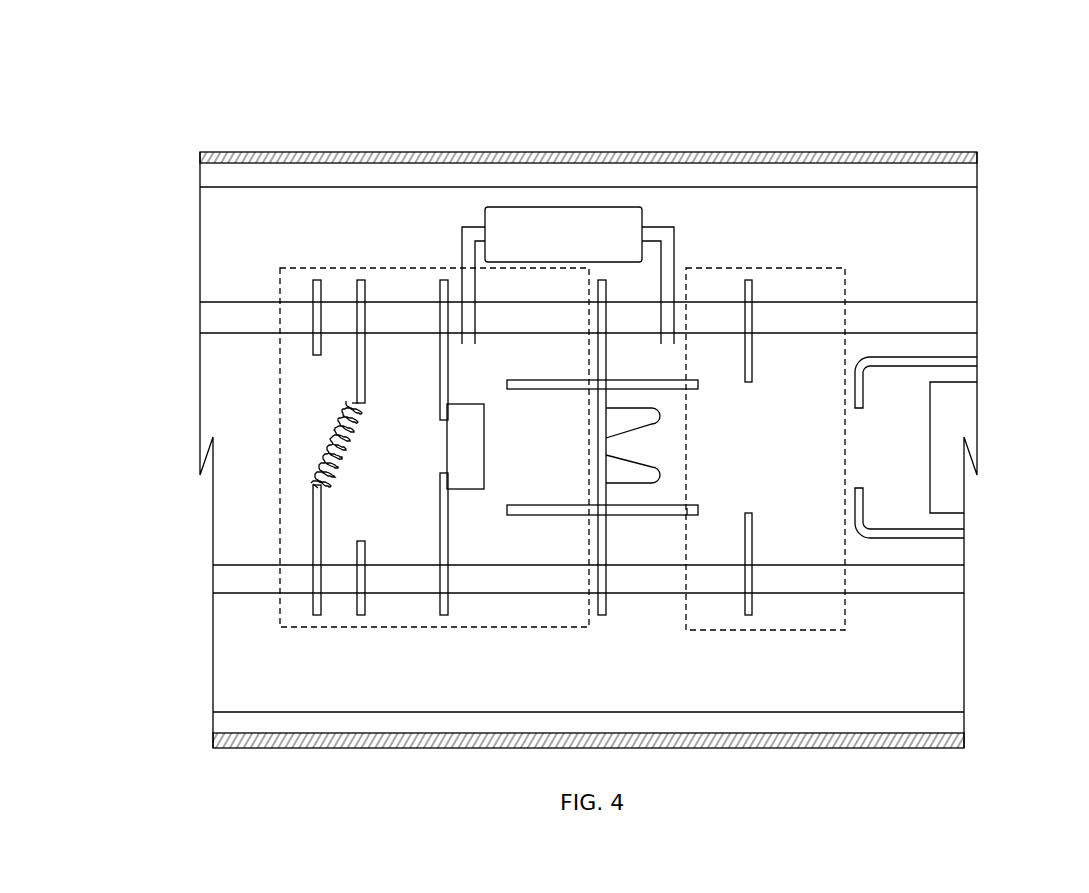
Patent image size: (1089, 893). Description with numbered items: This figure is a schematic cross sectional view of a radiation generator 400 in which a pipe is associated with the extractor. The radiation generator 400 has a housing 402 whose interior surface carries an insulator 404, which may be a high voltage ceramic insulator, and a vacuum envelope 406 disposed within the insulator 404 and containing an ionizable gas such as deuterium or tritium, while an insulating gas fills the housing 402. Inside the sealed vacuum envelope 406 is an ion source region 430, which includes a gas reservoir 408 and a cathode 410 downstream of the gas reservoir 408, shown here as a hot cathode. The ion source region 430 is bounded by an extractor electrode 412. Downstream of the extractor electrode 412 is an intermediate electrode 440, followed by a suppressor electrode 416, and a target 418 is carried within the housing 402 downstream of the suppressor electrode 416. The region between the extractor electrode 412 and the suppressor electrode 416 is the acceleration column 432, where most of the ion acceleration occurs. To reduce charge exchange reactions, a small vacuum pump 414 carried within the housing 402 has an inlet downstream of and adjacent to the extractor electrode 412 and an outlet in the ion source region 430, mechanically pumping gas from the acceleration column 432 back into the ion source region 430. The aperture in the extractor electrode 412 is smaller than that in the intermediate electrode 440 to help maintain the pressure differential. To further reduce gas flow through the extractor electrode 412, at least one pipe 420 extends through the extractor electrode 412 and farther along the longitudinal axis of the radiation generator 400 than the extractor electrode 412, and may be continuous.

The radiation generator 400 is at (89, 81).
The housing 402 is at (200, 153).
The insulator 404 is at (200, 183).
The vacuum envelope 406 is at (200, 320).
The gas reservoir 408 is at (330, 422).
The cathode 410 is at (447, 463).
The extractor electrode 412 is at (590, 487).
The vacuum pump 414 is at (642, 212).
The suppressor electrode 416 is at (977, 362).
The target 418 is at (977, 410).
The pipe 420 is at (698, 510).
The ion source region 430 is at (280, 288).
The acceleration column 432 is at (845, 607).
The intermediate electrode 440 is at (752, 362).